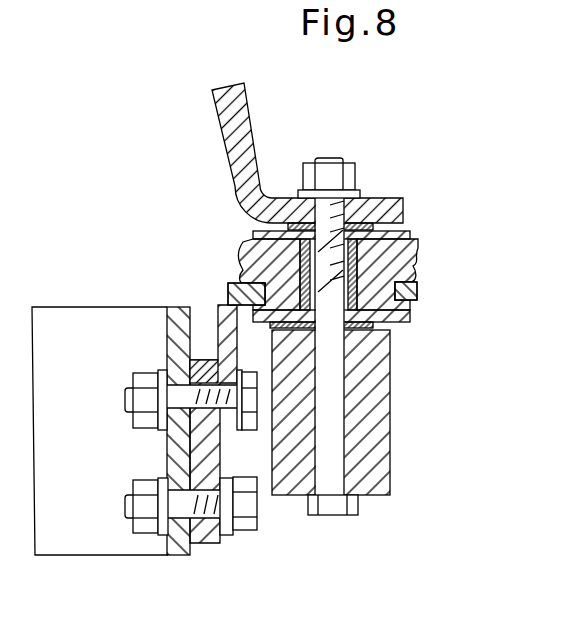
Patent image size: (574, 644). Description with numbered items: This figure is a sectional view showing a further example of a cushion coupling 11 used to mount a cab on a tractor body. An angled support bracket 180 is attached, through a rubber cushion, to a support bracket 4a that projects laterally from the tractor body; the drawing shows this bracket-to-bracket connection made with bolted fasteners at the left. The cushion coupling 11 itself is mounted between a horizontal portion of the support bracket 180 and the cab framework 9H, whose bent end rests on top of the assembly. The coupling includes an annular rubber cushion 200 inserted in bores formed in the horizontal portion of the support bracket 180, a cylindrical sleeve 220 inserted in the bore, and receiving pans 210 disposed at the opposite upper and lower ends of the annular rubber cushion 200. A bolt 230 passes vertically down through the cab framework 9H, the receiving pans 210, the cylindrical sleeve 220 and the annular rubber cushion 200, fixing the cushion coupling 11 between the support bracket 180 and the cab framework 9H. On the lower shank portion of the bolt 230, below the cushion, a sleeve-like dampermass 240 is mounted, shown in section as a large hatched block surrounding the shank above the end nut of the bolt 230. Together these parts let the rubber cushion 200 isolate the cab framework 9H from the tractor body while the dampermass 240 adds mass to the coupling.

The cab framework 9H is at (223, 132).
The support bracket 4a is at (105, 535).
The support bracket 180 is at (207, 560).
The annular rubber cushion 200 is at (412, 257).
The receiving pans 210 is at (412, 229).
The cylindrical sleeve 220 is at (418, 281).
The bolt 230 is at (332, 473).
The dampermass 240 is at (368, 457).
The cushion coupling 11 is at (416, 422).